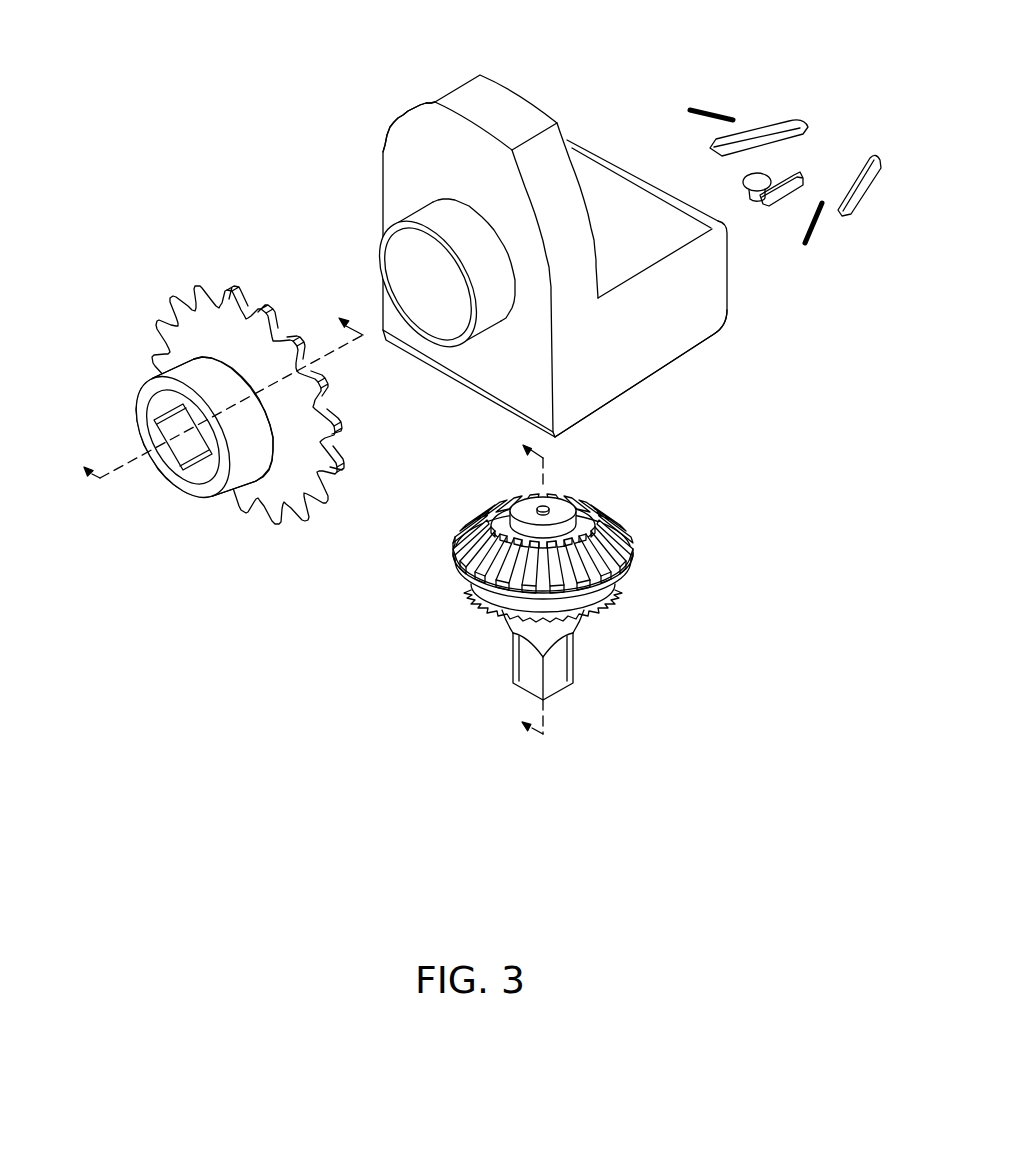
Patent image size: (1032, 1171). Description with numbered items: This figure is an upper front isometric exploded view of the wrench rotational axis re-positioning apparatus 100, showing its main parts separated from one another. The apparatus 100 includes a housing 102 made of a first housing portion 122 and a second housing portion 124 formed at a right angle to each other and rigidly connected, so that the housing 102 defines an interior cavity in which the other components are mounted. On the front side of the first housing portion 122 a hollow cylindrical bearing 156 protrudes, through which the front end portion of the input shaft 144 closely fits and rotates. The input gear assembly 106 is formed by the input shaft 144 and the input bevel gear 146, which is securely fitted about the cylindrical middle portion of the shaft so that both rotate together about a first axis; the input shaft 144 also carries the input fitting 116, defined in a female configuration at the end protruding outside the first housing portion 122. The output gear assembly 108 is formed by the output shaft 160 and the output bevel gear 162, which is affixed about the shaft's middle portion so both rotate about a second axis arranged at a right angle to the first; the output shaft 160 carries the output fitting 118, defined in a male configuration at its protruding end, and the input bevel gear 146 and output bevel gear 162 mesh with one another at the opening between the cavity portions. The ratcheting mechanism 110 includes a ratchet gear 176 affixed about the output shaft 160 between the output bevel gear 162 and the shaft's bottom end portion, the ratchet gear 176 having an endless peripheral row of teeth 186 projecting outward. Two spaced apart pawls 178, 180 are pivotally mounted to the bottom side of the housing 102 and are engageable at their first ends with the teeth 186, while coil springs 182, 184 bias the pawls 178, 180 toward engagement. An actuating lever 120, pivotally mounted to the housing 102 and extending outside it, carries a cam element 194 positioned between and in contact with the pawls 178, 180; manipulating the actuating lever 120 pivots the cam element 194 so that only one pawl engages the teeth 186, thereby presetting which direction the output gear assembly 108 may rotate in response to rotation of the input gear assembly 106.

The wrench rotational axis re-positioning apparatus 100 is at (370, 34).
The housing 102 is at (573, 137).
The input gear assembly 106 is at (211, 397).
The output gear assembly 108 is at (551, 581).
The ratcheting mechanism 110 is at (742, 354).
The input fitting 116 is at (183, 472).
The output fitting 118 is at (560, 678).
The actuating lever 120 is at (795, 175).
The first housing portion 122 is at (391, 130).
The second housing portion 124 is at (688, 337).
The input shaft 144 is at (187, 372).
The input bevel gear 146 is at (262, 505).
The hollow cylindrical bearing 156 is at (430, 215).
The output shaft 160 is at (567, 623).
The output bevel gear 162 is at (468, 557).
The ratchet gear 176 is at (498, 594).
The pawl 178 is at (855, 209).
The pawl 180 is at (808, 127).
The coil spring 182 is at (805, 245).
The coil spring 184 is at (712, 106).
The endless peripheral row of teeth 186 is at (517, 630).
The cam element 194 is at (748, 178).